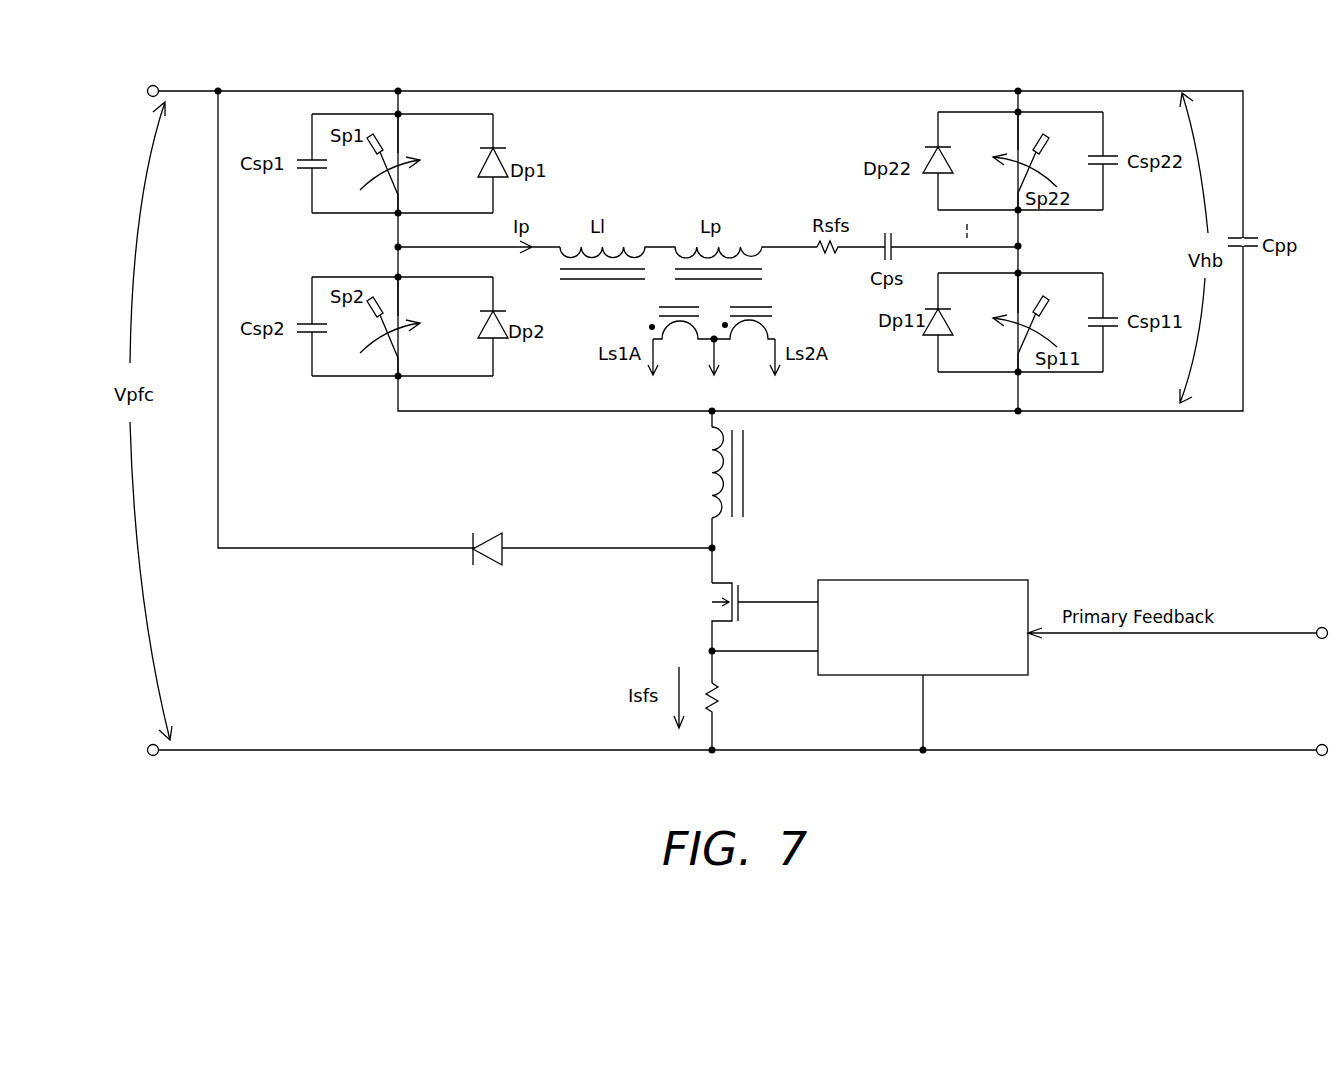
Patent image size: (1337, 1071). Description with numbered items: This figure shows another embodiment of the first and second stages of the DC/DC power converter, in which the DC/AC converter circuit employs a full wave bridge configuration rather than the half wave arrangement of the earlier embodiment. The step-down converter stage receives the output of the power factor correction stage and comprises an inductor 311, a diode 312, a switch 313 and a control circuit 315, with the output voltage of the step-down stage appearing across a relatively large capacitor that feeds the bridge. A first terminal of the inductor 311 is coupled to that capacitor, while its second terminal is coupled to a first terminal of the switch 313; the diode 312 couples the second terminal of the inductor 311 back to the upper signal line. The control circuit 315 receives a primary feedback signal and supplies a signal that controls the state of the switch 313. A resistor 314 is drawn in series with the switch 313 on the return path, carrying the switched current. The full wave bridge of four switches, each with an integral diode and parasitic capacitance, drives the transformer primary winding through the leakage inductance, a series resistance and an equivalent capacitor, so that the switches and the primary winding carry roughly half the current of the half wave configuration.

The inductor 311 is at (747, 470).
The diode 312 is at (492, 567).
The switch 313 is at (720, 582).
The sense resistor 314 is at (722, 695).
The control circuit 315 is at (957, 580).